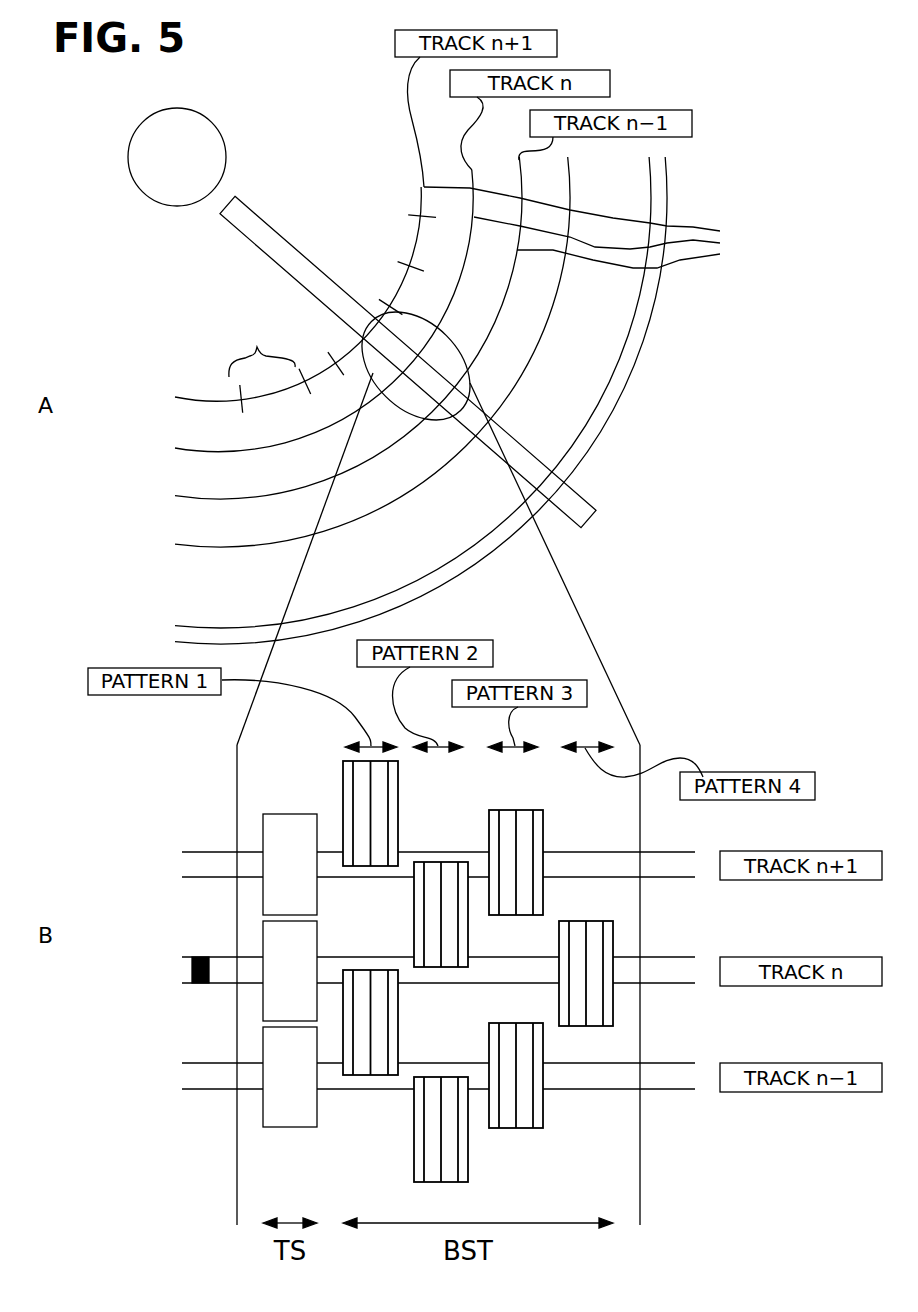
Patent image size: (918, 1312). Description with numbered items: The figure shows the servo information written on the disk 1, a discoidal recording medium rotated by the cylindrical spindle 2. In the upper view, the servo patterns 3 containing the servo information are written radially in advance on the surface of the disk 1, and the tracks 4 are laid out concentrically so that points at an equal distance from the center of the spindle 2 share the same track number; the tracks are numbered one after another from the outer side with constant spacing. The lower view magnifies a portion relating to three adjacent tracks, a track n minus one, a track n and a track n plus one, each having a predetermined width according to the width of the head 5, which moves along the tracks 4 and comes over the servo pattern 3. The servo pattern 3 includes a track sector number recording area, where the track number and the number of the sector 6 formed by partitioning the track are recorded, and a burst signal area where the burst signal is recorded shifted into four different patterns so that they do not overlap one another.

The disk 1 is at (585, 350).
The spindle 2 is at (191, 135).
The servo pattern 3 is at (270, 227).
The track 4 is at (589, 227).
The head 5 is at (192, 965).
The sector 6 is at (332, 314).